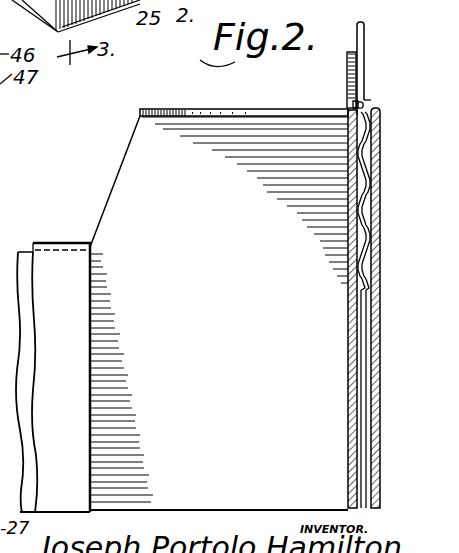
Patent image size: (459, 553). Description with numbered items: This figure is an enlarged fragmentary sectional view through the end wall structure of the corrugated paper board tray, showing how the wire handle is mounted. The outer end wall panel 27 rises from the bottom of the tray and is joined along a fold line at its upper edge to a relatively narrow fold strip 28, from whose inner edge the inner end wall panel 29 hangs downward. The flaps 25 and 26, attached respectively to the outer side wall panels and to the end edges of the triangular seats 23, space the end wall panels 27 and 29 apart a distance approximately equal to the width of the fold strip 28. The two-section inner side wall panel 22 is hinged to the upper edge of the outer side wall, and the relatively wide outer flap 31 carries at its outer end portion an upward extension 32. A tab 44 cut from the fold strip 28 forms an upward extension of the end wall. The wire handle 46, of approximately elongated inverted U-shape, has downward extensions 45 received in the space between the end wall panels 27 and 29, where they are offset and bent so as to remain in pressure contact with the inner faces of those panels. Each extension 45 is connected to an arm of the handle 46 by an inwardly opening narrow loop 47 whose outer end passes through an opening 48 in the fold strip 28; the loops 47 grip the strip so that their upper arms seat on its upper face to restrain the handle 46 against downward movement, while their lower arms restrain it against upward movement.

The inner side wall panel 22 is at (72, 307).
The seat 23 is at (200, 108).
The flap 25 is at (363, 313).
The flap 26 is at (368, 333).
The outer end wall panel 27 is at (378, 390).
The fold strip 28 is at (375, 107).
The inner end wall panel 29 is at (350, 368).
The outer flap 31 is at (25, 375).
The upward extension 32 is at (143, 167).
The tab 44 is at (347, 78).
The downward extension 45 is at (350, 231).
The wire handle 46 is at (365, 69).
The loop 47 is at (363, 100).
The opening 48 is at (352, 104).